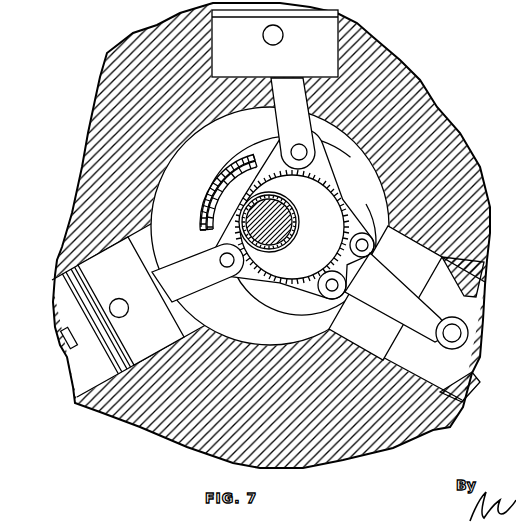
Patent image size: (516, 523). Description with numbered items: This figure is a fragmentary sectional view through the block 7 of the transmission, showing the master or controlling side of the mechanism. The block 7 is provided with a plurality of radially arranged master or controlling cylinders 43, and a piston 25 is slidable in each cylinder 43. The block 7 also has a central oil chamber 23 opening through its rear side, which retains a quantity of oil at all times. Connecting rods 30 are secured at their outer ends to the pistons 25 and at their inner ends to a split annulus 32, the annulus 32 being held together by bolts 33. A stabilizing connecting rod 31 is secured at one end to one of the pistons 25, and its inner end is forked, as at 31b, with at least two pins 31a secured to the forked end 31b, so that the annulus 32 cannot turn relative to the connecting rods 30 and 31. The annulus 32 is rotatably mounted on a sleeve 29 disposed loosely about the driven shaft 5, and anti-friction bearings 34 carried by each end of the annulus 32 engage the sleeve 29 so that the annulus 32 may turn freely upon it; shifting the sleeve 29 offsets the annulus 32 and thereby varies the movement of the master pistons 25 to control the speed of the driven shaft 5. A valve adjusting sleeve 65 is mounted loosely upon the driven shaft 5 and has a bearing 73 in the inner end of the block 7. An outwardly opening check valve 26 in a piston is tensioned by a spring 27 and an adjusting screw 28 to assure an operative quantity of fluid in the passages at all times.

The driven shaft 5 is at (272, 213).
The block 7 is at (465, 163).
The central oil chamber 23 is at (376, 133).
The piston 25 is at (325, 28).
The check valve 26 is at (97, 368).
The spring 27 is at (78, 362).
The adjusting screw 28 is at (65, 343).
The sleeve 29 is at (338, 247).
The connecting rods 30 is at (290, 120).
The stabilizing connecting rod 31 is at (385, 293).
The pins 31a is at (363, 237).
The forked end 31b is at (446, 256).
The split annulus 32 is at (240, 152).
The bolts 33 is at (278, 305).
The anti-friction bearings 34 is at (230, 180).
The master or controlling cylinders 43 is at (478, 258).
The valve adjusting sleeve 65 is at (297, 212).
The bearing 73 is at (294, 236).